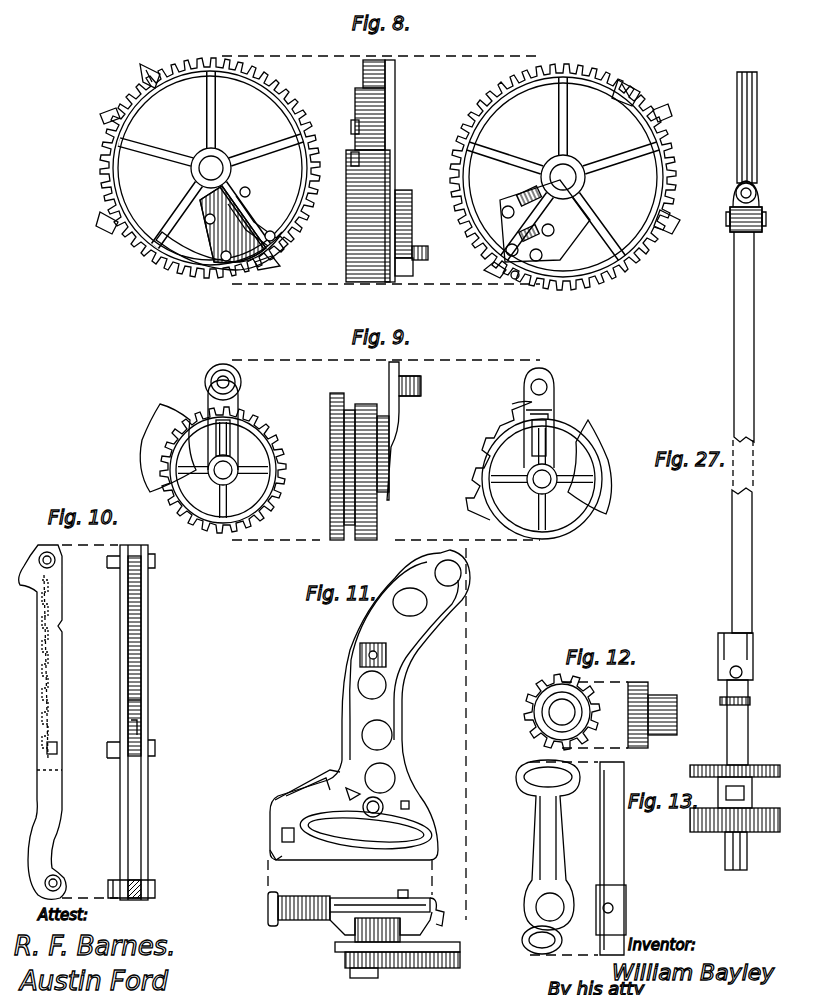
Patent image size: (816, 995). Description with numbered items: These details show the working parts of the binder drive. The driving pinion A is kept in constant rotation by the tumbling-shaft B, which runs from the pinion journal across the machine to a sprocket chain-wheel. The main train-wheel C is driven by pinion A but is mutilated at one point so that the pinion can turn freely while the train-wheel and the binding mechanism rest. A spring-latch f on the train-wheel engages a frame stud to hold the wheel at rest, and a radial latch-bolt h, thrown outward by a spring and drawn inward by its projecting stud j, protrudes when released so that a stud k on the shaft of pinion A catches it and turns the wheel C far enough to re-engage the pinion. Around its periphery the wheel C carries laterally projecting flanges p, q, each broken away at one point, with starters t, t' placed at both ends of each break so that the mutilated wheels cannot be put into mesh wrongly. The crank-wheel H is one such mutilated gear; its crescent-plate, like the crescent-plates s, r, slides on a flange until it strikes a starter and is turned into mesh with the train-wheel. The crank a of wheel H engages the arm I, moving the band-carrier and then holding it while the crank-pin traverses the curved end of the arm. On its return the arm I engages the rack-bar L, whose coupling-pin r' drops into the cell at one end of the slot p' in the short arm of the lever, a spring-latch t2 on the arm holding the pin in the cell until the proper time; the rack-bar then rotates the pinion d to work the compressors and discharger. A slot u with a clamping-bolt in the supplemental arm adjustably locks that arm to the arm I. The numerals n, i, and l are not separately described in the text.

In FIG. 8, the main train-wheel C is at (397, 174).
In FIG. 8, the starter t is at (387, 107).
In FIG. 8, the starter t' is at (382, 169).
In FIG. 8, the spring-latch f is at (268, 222).
In FIG. 8, the flange p is at (373, 244).
In FIG. 8, the radial latch-bolt h is at (280, 268).
In FIG. 8, the projecting stud j is at (514, 290).
In FIG. 8, the pin n is at (406, 278).
In FIG. 8, the flange q is at (388, 108).
In FIG. 8, the rim i is at (458, 165).
In FIG. 9, the crank-wheel H is at (381, 451).
In FIG. 9, the crank a is at (243, 384).
In FIG. 9, the crescent-plate s is at (380, 460).
In FIG. 10, the rack-bar L is at (89, 722).
In FIG. 10, the coupling-pin r' is at (101, 725).
In FIG. 11, the arm I is at (370, 705).
In FIG. 11, the slot p' is at (366, 829).
In FIG. 11, the spring-latch t2 is at (340, 800).
In FIG. 11, the base l is at (364, 939).
In FIG. 12, the pinion d is at (600, 712).
In FIG. 13, the crescent-plate r is at (571, 857).
In FIG. 13, the slot u is at (547, 860).
In FIG. 27, the tumbling-shaft B is at (747, 352).
In FIG. 27, the pinion A is at (735, 751).
In FIG. 27, the stud k is at (748, 792).